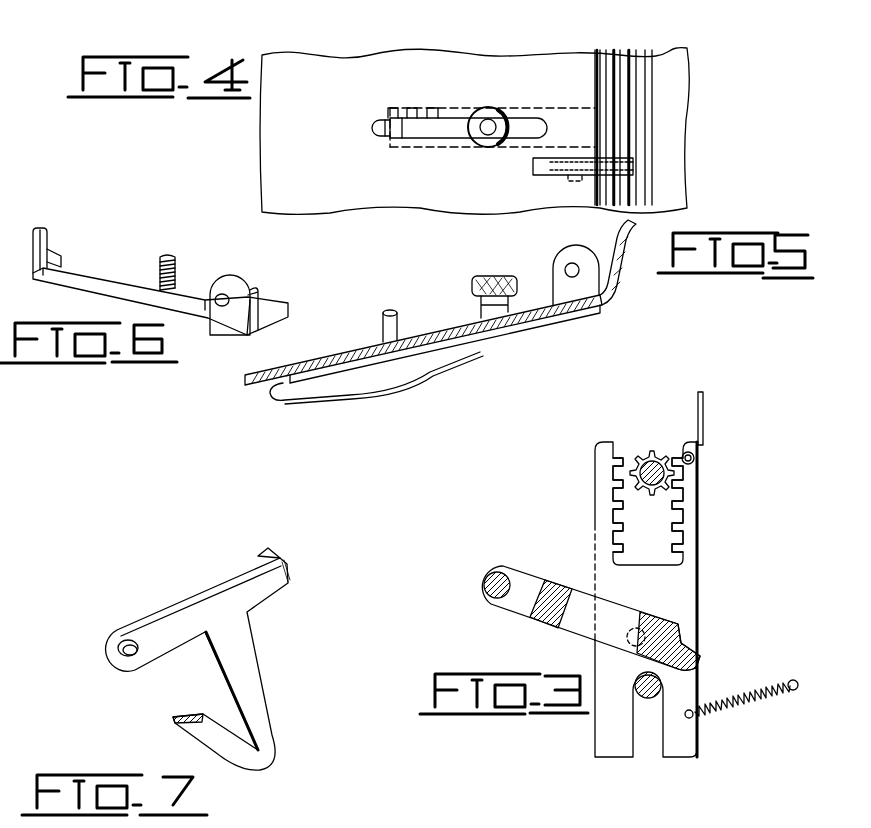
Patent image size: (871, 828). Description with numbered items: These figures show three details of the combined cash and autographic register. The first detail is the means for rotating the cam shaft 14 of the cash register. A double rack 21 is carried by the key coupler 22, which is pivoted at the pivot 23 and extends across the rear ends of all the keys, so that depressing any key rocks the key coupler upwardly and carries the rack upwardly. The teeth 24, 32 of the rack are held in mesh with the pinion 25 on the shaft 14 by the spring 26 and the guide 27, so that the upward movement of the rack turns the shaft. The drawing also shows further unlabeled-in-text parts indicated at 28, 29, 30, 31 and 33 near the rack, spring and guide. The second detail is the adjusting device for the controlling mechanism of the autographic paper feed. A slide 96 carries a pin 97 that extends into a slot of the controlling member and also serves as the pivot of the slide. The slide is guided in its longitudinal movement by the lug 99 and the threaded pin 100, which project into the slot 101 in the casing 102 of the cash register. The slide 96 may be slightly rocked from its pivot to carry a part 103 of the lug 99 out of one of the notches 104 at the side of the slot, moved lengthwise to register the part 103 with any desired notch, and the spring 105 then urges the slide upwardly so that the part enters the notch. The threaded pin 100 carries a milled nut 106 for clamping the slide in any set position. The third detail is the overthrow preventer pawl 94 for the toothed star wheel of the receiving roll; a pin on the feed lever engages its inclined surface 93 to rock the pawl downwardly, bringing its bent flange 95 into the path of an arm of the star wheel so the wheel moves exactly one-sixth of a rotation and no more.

In FIG. 3, the shaft 14 is at (638, 468).
In FIG. 3, the double rack 21 is at (672, 603).
In FIG. 3, the key coupler 22 is at (549, 576).
In FIG. 3, the pivot 23 is at (494, 583).
In FIG. 3, the teeth 24 is at (675, 525).
In FIG. 3, the pinion 25 is at (650, 452).
In FIG. 3, the spring 26 is at (723, 713).
In FIG. 3, the guide 27 is at (703, 436).
In FIG. 3, the small gear 28 is at (695, 462).
In FIG. 3, the spring pin 29 is at (688, 718).
In FIG. 3, the pin 30 is at (642, 693).
In FIG. 3, the anchor pin 31 is at (791, 680).
In FIG. 3, the teeth 32 is at (617, 512).
In FIG. 3, the stop bar 33 is at (701, 392).
In FIG. 7, the inclined surface 93 is at (195, 714).
In FIG. 7, the overthrow preventer pawl 94 is at (185, 620).
In FIG. 7, the flange 95 is at (272, 556).
In FIG. 4, the slide 96 is at (568, 110).
In FIG. 6, the slide 96 is at (110, 282).
In FIG. 5, the slide 96 is at (522, 330).
In FIG. 4, the pin 97 is at (571, 173).
In FIG. 5, the pin 97 is at (582, 270).
In FIG. 4, the lug 99 is at (382, 133).
In FIG. 6, the lug 99 is at (42, 227).
In FIG. 5, the lug 99 is at (388, 311).
In FIG. 6, the threaded pin 100 is at (190, 285).
In FIG. 5, the threaded pin 100 is at (498, 258).
In FIG. 4, the slot 101 is at (434, 140).
In FIG. 4, the casing 102 is at (265, 165).
In FIG. 5, the casing 102 is at (350, 352).
In FIG. 4, the part 103 is at (386, 115).
In FIG. 6, the part 103 is at (56, 254).
In FIG. 4, the notches 104 is at (445, 110).
In FIG. 5, the spring 105 is at (360, 385).
In FIG. 4, the milled nut 106 is at (500, 108).